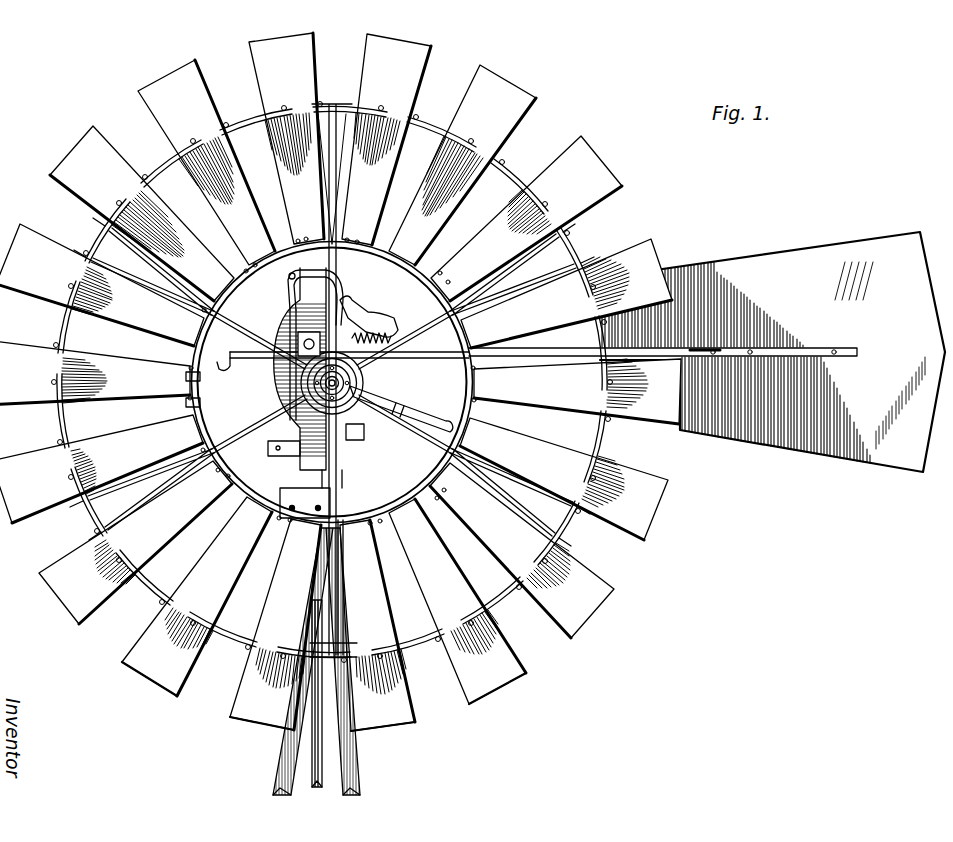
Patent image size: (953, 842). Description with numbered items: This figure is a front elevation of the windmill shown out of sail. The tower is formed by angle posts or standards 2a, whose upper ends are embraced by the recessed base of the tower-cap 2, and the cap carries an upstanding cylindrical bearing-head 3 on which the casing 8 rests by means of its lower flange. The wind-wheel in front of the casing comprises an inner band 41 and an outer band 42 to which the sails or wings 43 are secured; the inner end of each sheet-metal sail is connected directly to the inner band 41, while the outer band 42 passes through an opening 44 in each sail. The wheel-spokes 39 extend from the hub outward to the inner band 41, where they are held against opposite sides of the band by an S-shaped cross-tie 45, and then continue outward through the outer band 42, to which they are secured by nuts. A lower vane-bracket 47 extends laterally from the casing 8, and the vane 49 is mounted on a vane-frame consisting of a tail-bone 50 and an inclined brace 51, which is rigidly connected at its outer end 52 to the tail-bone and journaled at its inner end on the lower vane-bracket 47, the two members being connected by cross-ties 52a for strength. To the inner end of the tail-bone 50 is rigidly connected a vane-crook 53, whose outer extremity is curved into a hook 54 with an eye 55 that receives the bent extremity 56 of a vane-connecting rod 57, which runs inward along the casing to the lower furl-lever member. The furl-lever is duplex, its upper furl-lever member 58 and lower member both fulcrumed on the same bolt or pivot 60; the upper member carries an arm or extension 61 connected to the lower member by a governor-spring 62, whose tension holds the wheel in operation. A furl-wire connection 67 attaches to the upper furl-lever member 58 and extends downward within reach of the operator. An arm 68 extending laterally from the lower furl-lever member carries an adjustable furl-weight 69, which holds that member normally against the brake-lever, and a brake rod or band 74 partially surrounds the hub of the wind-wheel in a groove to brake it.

The tower-cap 2 is at (288, 490).
The angle posts or standards 2a is at (362, 758).
The bearing-head 3 is at (338, 476).
The casing 8 is at (290, 386).
The wheel-spokes 39 is at (262, 340).
The inner band 41 is at (425, 246).
The outer band 42 is at (432, 126).
The sails or wings 43 is at (520, 100).
The opening 44 is at (480, 140).
The S-shaped cross-tie 45 is at (340, 252).
The lower vane-bracket 47 is at (272, 452).
The vane 49 is at (772, 352).
The tail-bone 50 is at (540, 348).
The inclined brace 51 is at (392, 425).
The outer end of the inclined brace 52 is at (720, 348).
The cross-ties 52a is at (380, 356).
The vane-crook 53 is at (238, 372).
The hook 54 is at (225, 350).
The eye 55 is at (186, 378).
The bent extremity 56 is at (188, 404).
The vane-connecting rod 57 is at (252, 362).
The upper furl-lever member 58 is at (298, 268).
The bolt or pivot 60 is at (348, 318).
The arm or extension 61 is at (376, 316).
The governor-spring 62 is at (385, 338).
The furl-wire connection 67 is at (286, 392).
The arm 68 is at (414, 402).
The furl-weight 69 is at (472, 428).
The brake rod or band 74 is at (350, 432).